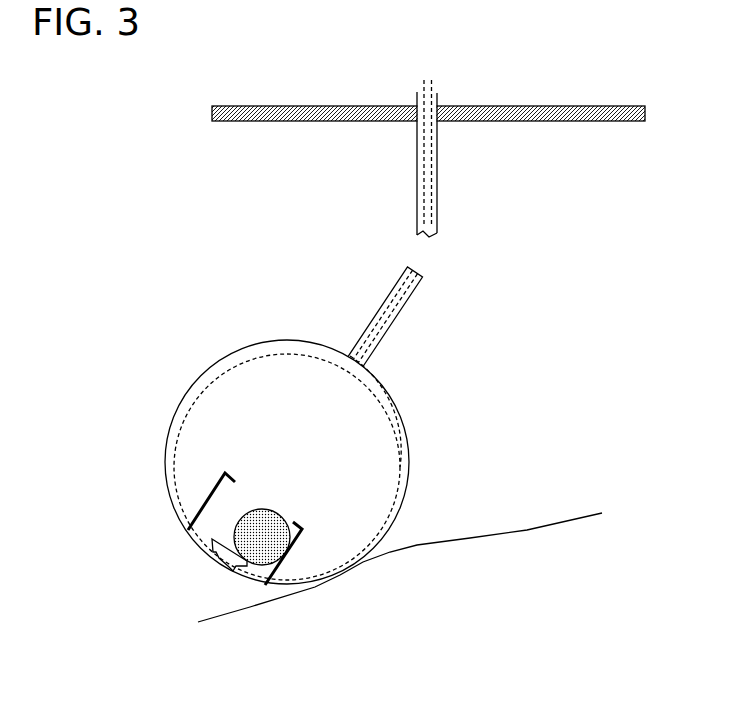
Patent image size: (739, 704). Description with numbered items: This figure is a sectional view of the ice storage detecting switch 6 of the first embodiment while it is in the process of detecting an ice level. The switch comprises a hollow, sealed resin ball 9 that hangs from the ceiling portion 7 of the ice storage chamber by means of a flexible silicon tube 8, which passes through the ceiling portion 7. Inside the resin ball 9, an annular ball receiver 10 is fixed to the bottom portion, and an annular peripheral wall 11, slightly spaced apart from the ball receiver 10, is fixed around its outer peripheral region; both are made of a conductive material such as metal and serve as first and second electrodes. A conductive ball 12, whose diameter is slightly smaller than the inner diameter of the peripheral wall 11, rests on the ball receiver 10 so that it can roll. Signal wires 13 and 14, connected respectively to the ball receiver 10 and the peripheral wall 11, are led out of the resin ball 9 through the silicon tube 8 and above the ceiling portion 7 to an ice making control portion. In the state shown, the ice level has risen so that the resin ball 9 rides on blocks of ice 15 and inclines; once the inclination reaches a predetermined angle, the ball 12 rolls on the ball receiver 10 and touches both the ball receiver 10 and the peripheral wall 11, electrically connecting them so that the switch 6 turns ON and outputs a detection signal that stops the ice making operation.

The ice storage detecting switch 6 is at (341, 282).
The ceiling portion 7 is at (585, 124).
The silicon tube 8 is at (395, 320).
The resin ball 9 is at (400, 412).
The ball receiver 10 is at (238, 566).
The peripheral wall 11 is at (203, 502).
The ball 12 is at (268, 507).
The signal wire 13 is at (247, 358).
The signal wire 14 is at (395, 440).
The ice 15 is at (527, 530).